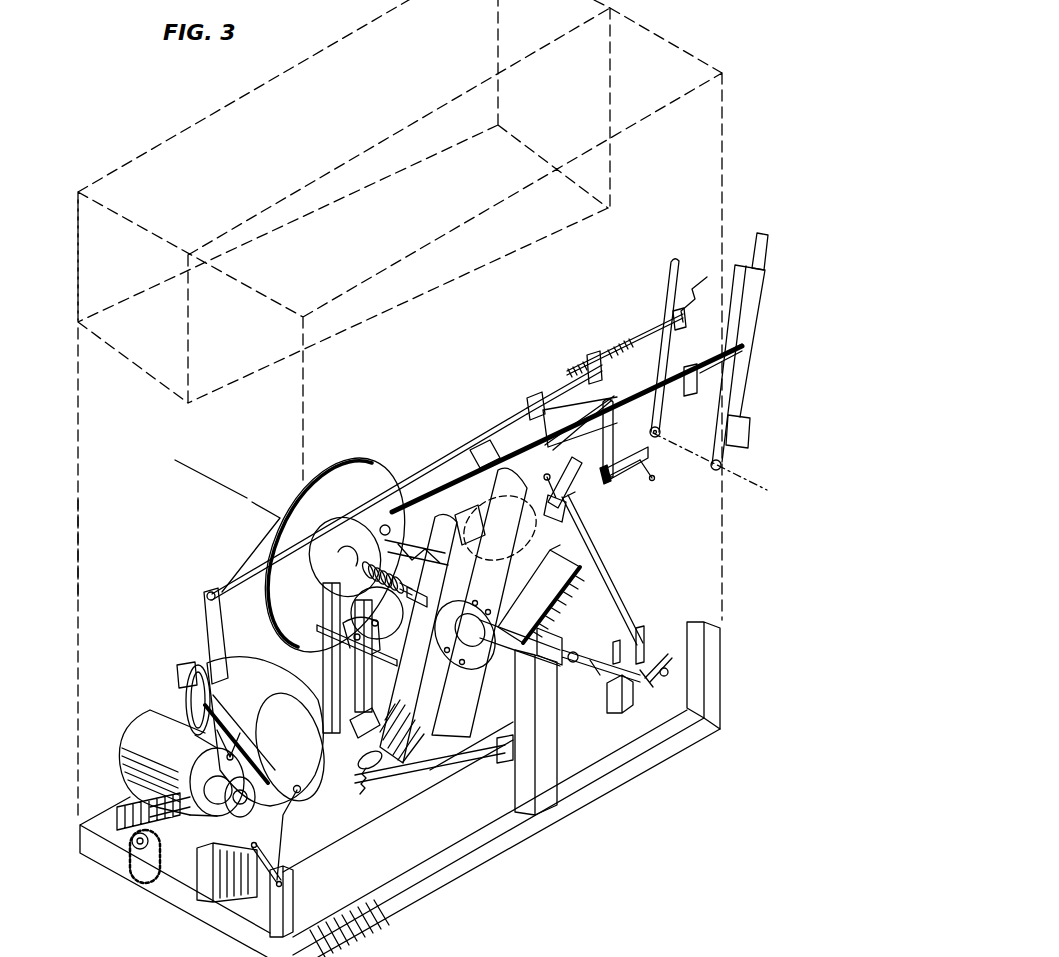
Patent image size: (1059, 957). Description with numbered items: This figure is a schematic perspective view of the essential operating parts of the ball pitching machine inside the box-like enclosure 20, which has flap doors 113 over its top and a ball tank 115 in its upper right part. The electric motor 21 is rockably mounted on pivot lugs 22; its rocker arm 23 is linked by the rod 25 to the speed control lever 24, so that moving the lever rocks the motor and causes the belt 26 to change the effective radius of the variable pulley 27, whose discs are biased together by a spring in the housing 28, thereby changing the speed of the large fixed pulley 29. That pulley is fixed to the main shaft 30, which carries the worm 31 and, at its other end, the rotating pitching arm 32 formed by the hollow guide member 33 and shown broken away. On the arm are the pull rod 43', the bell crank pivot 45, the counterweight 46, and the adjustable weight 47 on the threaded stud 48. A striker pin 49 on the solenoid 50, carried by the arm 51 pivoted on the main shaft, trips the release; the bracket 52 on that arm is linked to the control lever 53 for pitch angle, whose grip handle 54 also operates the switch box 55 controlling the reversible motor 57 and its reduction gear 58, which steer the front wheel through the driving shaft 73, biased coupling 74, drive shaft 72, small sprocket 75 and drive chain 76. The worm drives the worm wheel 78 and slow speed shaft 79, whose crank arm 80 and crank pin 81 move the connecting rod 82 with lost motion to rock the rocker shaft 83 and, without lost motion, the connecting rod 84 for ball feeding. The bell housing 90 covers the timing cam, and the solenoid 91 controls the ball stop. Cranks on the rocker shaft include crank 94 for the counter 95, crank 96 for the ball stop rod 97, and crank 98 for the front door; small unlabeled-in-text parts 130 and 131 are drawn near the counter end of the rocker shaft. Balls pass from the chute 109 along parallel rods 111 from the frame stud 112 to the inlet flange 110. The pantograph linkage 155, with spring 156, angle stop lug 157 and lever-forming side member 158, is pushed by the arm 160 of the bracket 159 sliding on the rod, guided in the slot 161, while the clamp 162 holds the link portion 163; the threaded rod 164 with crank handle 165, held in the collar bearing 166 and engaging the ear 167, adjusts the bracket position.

The box-like enclosure 20 is at (78, 550).
The electric motor 21 is at (220, 700).
The pivot lugs 22 is at (233, 742).
The rocker arm 23 is at (222, 648).
The speed control lever 24 is at (673, 263).
The rod 25 is at (440, 470).
The belt 26 is at (262, 563).
The pulley 27 is at (186, 704).
The housing 28 is at (185, 668).
The large fixed pulley 29 is at (375, 477).
The main shaft 30 is at (350, 567).
The worm 31 is at (378, 598).
The rotating pitching arm 32 is at (457, 688).
The hollow guide member 33 is at (440, 698).
The pull rod 43' is at (488, 435).
The pivot 45 is at (481, 548).
The counterweight 46 is at (360, 725).
The adjustable weight 47 is at (395, 772).
The threaded stud 48 is at (363, 790).
The striker pin 49 is at (472, 568).
The solenoid 50 is at (430, 503).
The arm 51 is at (414, 605).
The bracket 52 is at (400, 517).
The control lever 53 is at (740, 307).
The grip handle 54 is at (762, 248).
The switch box 55 is at (742, 432).
The reversible motor 57 is at (137, 737).
The reduction gear 58 is at (235, 765).
The drive shaft 72 is at (172, 822).
The driving shaft 73 is at (235, 817).
The biased coupling 74 is at (147, 800).
The small sprocket 75 is at (128, 855).
The drive chain 76 is at (155, 878).
The worm wheel 78 is at (378, 636).
The slow speed shaft 79 is at (330, 622).
The crank arm 80 is at (550, 523).
The crank pin 81 is at (577, 512).
The connecting rod 82 is at (600, 562).
The rocker shaft 83 is at (457, 767).
The connecting rod 84 is at (582, 500).
The bell housing 90 is at (556, 600).
The solenoid 91 is at (578, 668).
The crank 94 is at (670, 657).
The counter 95 is at (618, 702).
The crank 96 is at (608, 670).
The ball stop rod 97 is at (567, 637).
The crank 98 is at (273, 880).
The chute 109 is at (562, 598).
The inlet flange 110 is at (452, 647).
The parallel rods 111 is at (466, 655).
The frame stud 112 is at (547, 805).
The flap doors 113 is at (673, 62).
The ball tank 115 is at (120, 270).
The bracket 130 is at (638, 630).
The link 131 is at (652, 677).
The pantograph linkage 155 is at (623, 406).
The spring 156 is at (538, 440).
The angle stop lug 157 is at (605, 430).
The side member 158 is at (650, 453).
The bracket 159 is at (553, 393).
The arm 160 is at (655, 478).
The slot 161 is at (620, 480).
The clamp 162 is at (695, 390).
The link portion 163 is at (717, 360).
The threaded rod 164 is at (633, 340).
The crank handle 165 is at (704, 276).
The collar bearing 166 is at (679, 319).
The ear 167 is at (588, 356).